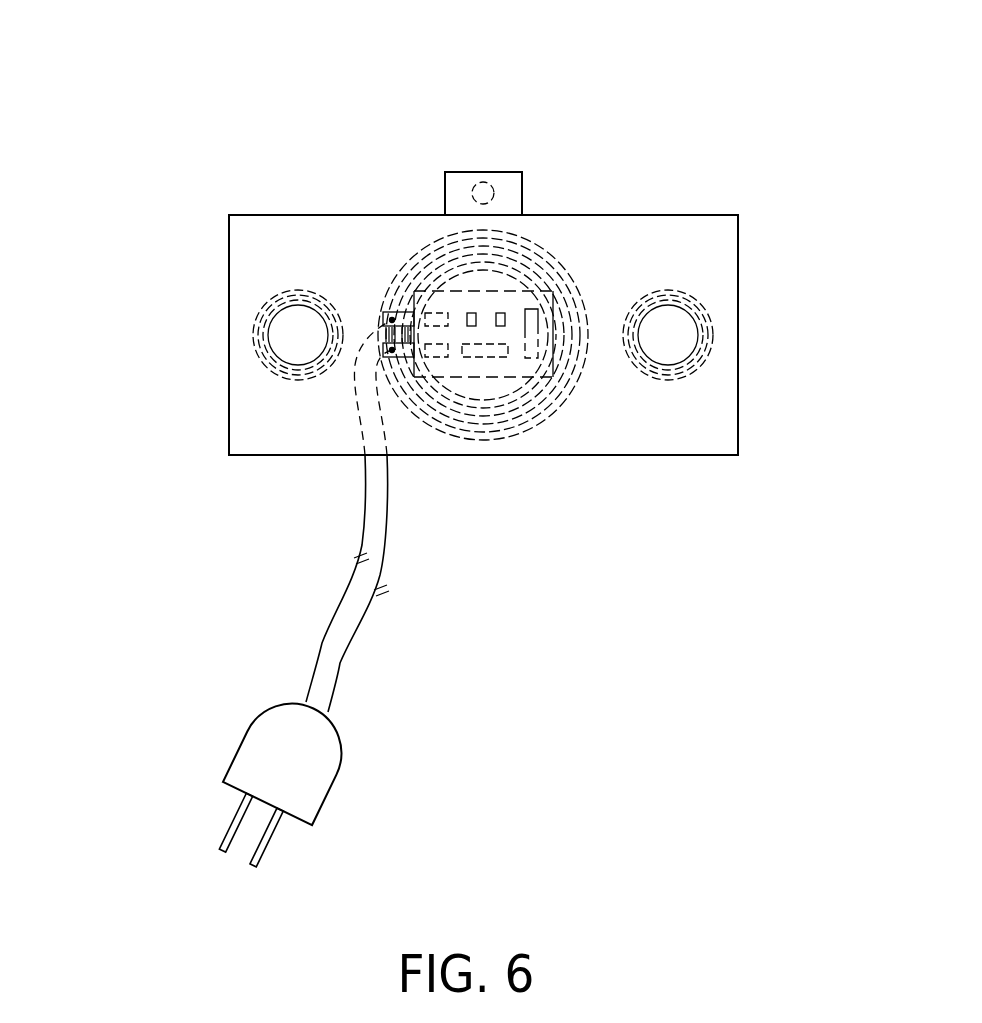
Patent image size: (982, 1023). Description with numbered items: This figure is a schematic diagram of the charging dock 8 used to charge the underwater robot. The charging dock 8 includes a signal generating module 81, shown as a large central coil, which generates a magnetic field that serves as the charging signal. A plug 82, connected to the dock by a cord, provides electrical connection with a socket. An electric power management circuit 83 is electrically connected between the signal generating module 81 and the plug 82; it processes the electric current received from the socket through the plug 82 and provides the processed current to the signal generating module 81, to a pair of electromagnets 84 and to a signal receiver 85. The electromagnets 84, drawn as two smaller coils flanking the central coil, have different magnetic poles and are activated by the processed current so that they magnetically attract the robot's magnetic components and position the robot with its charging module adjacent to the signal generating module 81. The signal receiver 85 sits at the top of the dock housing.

The charging dock 8 is at (258, 207).
The signal generating module 81 is at (551, 257).
The plug 82 is at (267, 737).
The electric power management circuit 83 is at (515, 365).
The electromagnets 84 is at (252, 333).
The signal receiver 85 is at (461, 185).